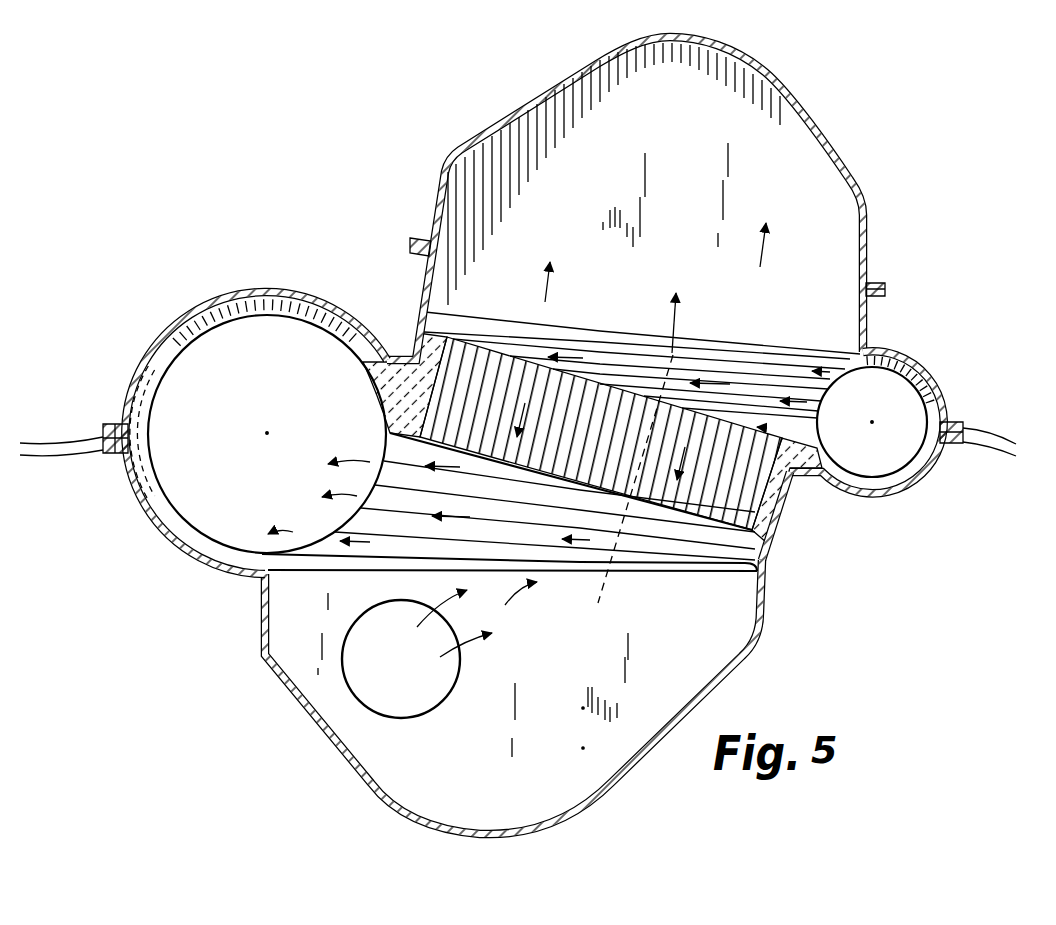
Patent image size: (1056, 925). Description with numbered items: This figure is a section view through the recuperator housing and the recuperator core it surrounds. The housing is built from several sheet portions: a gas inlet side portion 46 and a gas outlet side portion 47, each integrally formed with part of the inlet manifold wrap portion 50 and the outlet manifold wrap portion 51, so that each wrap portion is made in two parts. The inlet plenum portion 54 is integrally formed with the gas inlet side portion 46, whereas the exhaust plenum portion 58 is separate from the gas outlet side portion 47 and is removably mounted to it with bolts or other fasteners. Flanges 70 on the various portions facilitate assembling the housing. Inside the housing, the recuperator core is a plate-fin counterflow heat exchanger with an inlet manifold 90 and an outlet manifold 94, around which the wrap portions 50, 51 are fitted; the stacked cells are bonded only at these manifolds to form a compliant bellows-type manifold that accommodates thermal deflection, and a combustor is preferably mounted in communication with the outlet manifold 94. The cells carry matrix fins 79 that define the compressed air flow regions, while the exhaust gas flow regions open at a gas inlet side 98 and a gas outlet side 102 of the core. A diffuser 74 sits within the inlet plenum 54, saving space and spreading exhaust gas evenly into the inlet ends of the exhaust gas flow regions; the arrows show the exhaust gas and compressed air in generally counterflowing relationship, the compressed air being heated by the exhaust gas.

The exhaust plenum portion 58 is at (518, 118).
The outlet manifold wrap portion 51 is at (287, 256).
The outlet manifold 94 is at (207, 345).
The flanges 70 is at (410, 248).
The gas outlet side portion 47 is at (873, 311).
The gas outlet side 102 is at (784, 344).
The inlet manifold 90 is at (893, 378).
The inlet manifold wrap portion 50 is at (935, 386).
The gas inlet side portion 46 is at (788, 506).
The matrix fins 79 is at (773, 535).
The gas inlet side 98 is at (712, 563).
The diffuser 74 is at (462, 660).
The inlet plenum portion 54 is at (611, 785).